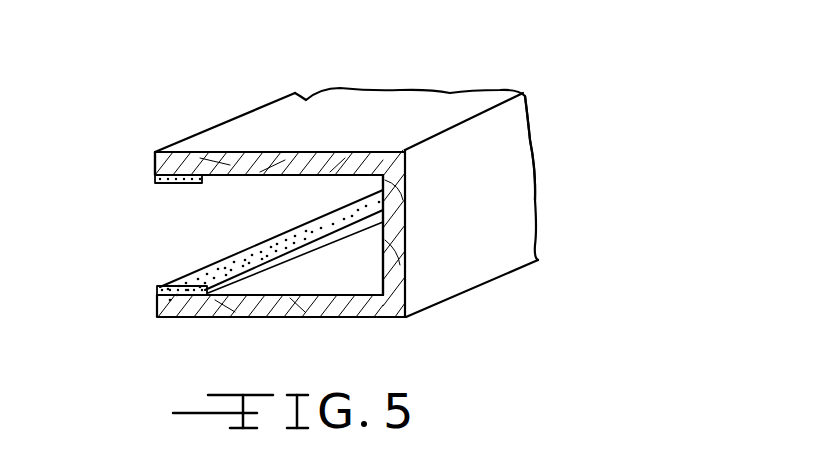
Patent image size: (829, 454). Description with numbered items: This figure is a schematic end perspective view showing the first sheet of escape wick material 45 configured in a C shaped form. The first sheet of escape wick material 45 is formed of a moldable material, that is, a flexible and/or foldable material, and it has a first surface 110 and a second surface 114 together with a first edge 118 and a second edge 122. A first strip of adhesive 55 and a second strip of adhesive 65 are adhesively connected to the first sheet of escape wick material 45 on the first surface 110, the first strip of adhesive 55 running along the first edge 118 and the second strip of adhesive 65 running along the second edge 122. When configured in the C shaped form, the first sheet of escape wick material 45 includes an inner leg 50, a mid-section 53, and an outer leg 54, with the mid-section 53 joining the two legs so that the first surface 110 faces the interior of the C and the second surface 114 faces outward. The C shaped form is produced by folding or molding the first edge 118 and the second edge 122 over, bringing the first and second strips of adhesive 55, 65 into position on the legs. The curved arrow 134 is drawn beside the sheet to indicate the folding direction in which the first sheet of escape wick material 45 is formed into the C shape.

The first sheet of escape wick material 45 is at (548, 142).
The inner leg 50 is at (310, 162).
The mid-section 53 is at (407, 228).
The outer leg 54 is at (272, 298).
The first strip of adhesive 55 is at (172, 183).
The second strip of adhesive 65 is at (175, 280).
The first surface 110 is at (328, 270).
The second surface 114 is at (518, 205).
The first edge 118 is at (155, 162).
The second edge 122 is at (157, 305).
The rotation direction arrow 134 is at (600, 86).